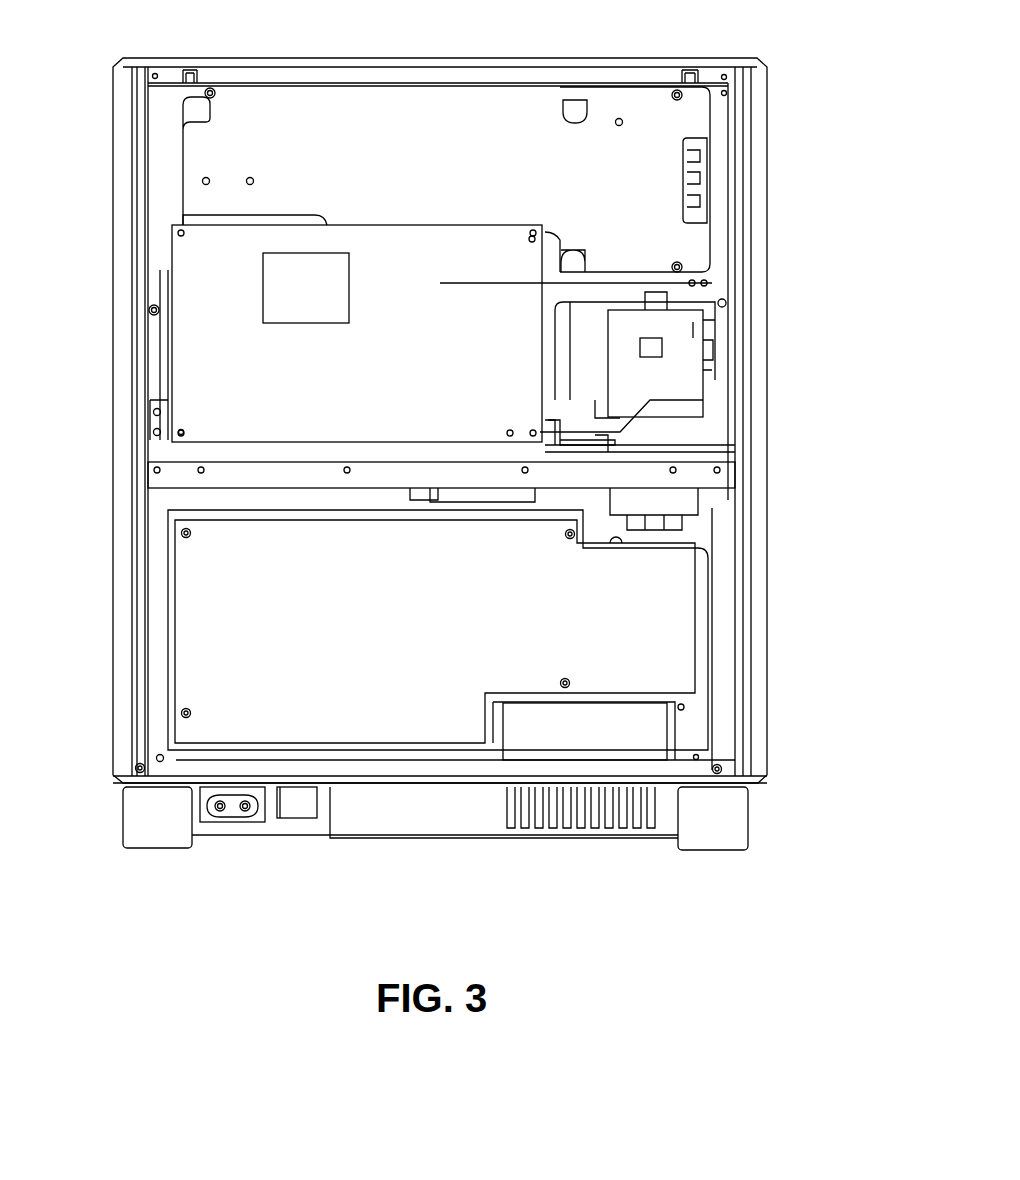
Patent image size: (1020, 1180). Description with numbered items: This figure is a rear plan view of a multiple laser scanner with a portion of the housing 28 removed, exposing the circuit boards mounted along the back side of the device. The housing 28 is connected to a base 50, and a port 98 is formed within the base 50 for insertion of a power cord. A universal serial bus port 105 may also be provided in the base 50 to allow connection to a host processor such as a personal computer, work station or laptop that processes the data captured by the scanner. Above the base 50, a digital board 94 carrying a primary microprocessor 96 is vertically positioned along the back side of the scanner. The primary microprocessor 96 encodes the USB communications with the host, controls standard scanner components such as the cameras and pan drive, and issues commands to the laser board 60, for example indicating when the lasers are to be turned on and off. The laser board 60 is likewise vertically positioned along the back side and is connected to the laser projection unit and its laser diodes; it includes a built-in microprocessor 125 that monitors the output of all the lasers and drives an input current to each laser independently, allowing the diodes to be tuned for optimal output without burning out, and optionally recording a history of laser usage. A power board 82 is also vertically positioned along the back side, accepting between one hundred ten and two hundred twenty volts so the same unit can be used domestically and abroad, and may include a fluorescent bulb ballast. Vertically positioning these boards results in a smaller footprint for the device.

The housing 28 is at (763, 63).
The digital board 94 is at (203, 342).
The primary microprocessor 96 is at (313, 280).
The laser board 60 is at (682, 353).
The microprocessor 125 is at (650, 358).
The power board 82 is at (680, 600).
The base 50 is at (123, 818).
The port 98 is at (232, 815).
The USB port 105 is at (296, 812).